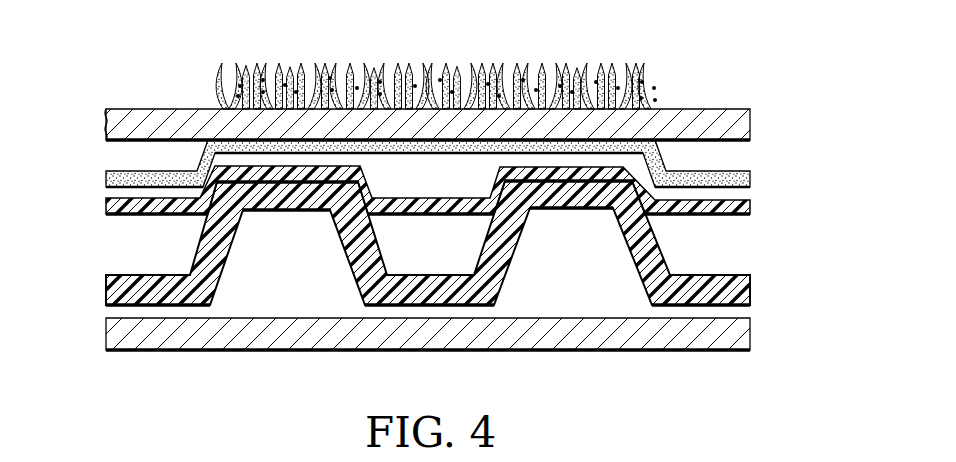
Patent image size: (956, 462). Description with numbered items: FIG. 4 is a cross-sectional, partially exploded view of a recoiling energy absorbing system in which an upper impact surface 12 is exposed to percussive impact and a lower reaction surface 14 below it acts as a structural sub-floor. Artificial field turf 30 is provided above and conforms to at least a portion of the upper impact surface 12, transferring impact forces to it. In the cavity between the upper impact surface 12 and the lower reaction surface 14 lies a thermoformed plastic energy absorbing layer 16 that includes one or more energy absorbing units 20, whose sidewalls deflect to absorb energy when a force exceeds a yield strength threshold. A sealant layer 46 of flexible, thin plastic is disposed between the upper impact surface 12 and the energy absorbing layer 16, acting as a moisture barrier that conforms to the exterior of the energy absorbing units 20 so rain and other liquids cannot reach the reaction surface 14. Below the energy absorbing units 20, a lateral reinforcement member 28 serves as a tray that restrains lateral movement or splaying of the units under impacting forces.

The upper impact surface 12 is at (750, 128).
The lower reaction surface 14 is at (286, 352).
The energy absorbing layer 16 is at (458, 237).
The energy absorbing units 20 is at (650, 365).
The lateral reinforcement member 28 is at (423, 215).
The artificial field turf 30 is at (634, 83).
The sealant layer 46 is at (727, 171).